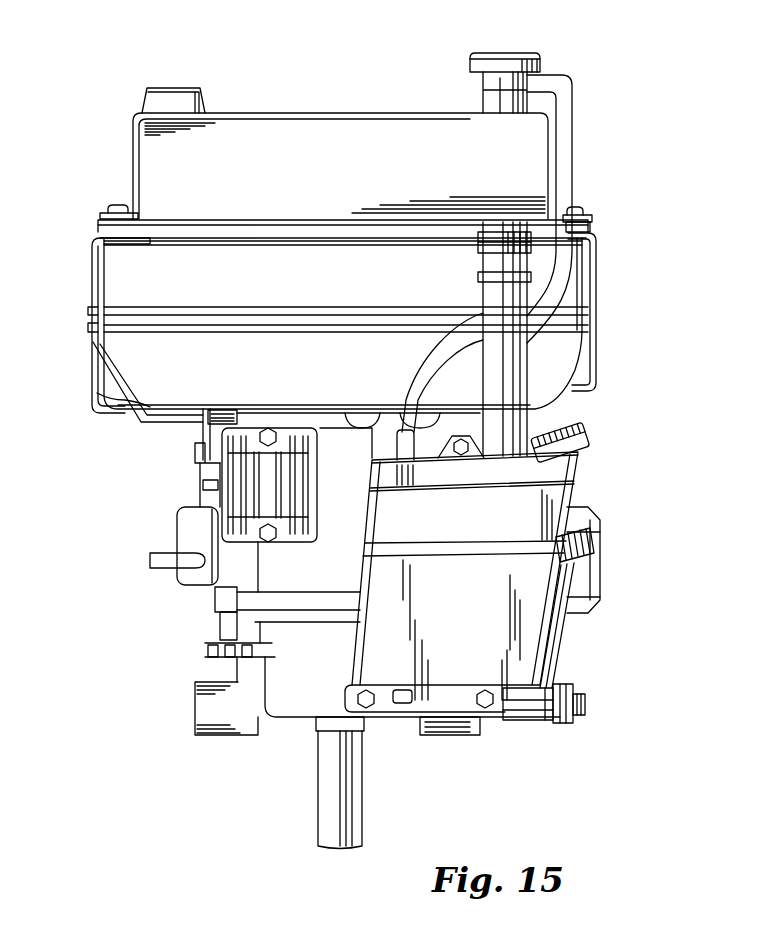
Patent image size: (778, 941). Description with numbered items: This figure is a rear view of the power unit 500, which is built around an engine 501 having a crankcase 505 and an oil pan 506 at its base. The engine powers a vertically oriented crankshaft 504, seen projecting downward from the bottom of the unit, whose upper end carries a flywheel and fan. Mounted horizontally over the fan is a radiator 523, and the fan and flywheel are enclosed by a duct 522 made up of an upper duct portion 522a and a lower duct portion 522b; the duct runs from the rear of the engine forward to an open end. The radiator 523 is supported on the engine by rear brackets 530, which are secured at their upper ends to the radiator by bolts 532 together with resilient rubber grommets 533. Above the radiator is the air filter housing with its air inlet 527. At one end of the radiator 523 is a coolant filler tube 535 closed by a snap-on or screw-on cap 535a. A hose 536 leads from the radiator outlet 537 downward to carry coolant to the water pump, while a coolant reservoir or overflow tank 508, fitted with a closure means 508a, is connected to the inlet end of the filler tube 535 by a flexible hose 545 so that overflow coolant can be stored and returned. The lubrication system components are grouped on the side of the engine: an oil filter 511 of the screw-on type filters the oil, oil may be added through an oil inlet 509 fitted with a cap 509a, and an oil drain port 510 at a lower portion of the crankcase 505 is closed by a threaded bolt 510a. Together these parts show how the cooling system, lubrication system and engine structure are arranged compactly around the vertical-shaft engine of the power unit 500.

The power unit 500 is at (234, 48).
The engine 501 is at (162, 626).
The crankshaft 504 is at (360, 780).
The crankcase 505 is at (332, 583).
The oil pan 506 is at (297, 703).
The coolant reservoir 508 is at (483, 627).
The closure means 508a is at (578, 443).
The oil inlet 509 is at (563, 633).
The cap 509a is at (590, 553).
The oil drain port 510 is at (553, 723).
The threaded bolt 510a is at (586, 700).
The oil filter 511 is at (596, 528).
The duct 522 is at (266, 259).
The upper duct portion 522a is at (342, 296).
The lower duct portion 522b is at (345, 378).
The radiator 523 is at (395, 184).
The air inlet 527 is at (205, 105).
The rear brackets 530 is at (598, 256).
The bolts 532 is at (118, 205).
The rubber grommets 533 is at (100, 217).
The coolant filler tube 535 is at (486, 101).
The cap 535a is at (530, 53).
The hose 536 is at (510, 372).
The radiator outlet 537 is at (487, 242).
The flexible hose 545 is at (548, 270).